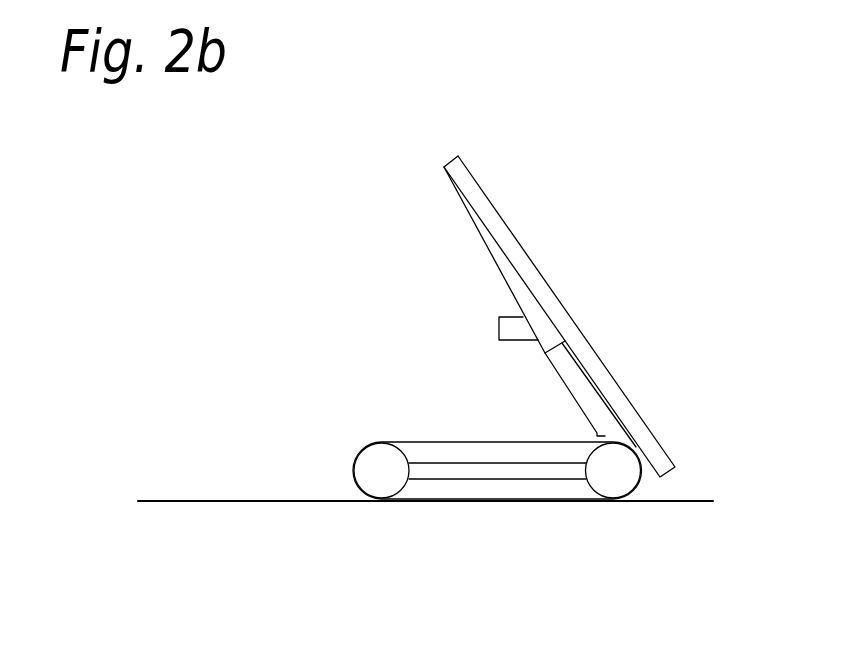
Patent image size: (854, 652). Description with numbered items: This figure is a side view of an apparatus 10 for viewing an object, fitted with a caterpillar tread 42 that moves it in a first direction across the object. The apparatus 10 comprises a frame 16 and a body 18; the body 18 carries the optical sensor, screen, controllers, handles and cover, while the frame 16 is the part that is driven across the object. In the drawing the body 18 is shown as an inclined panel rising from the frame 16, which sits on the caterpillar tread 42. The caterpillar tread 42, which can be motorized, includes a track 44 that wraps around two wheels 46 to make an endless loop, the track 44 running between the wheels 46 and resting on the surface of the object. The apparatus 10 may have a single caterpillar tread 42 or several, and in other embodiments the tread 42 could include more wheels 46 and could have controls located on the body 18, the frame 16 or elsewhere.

The apparatus 10 is at (505, 363).
The body 18 is at (647, 390).
The frame 16 is at (483, 374).
The caterpillar tread 42 is at (459, 474).
The track 44 is at (518, 443).
The wheels 46 is at (385, 470).